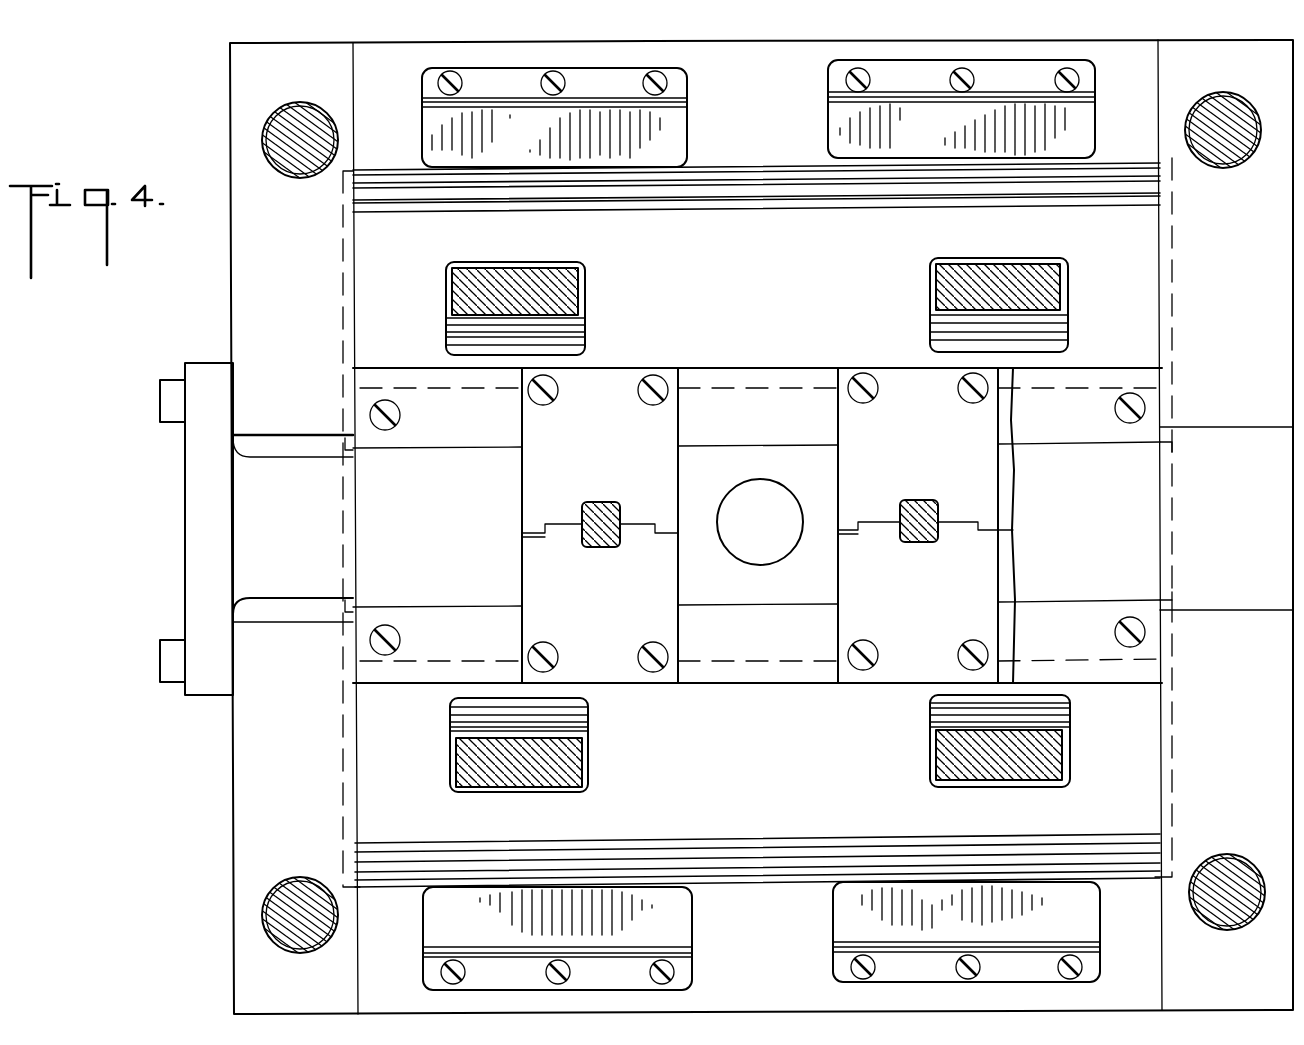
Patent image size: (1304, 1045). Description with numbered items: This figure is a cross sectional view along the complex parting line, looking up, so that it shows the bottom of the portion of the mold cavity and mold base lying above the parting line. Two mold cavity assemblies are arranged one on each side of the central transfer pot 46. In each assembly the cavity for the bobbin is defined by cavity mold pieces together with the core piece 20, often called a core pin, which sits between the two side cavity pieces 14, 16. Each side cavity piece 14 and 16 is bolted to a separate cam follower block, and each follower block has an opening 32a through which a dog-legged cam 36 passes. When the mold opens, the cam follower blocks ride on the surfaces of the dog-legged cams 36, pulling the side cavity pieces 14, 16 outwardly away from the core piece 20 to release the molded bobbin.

The side cavity piece 14 is at (528, 484).
The side cavity piece 16 is at (528, 560).
The core piece 20 is at (597, 502).
The opening 32a is at (455, 336).
The cam 36 is at (567, 290).
The transfer pot 46 is at (773, 552).